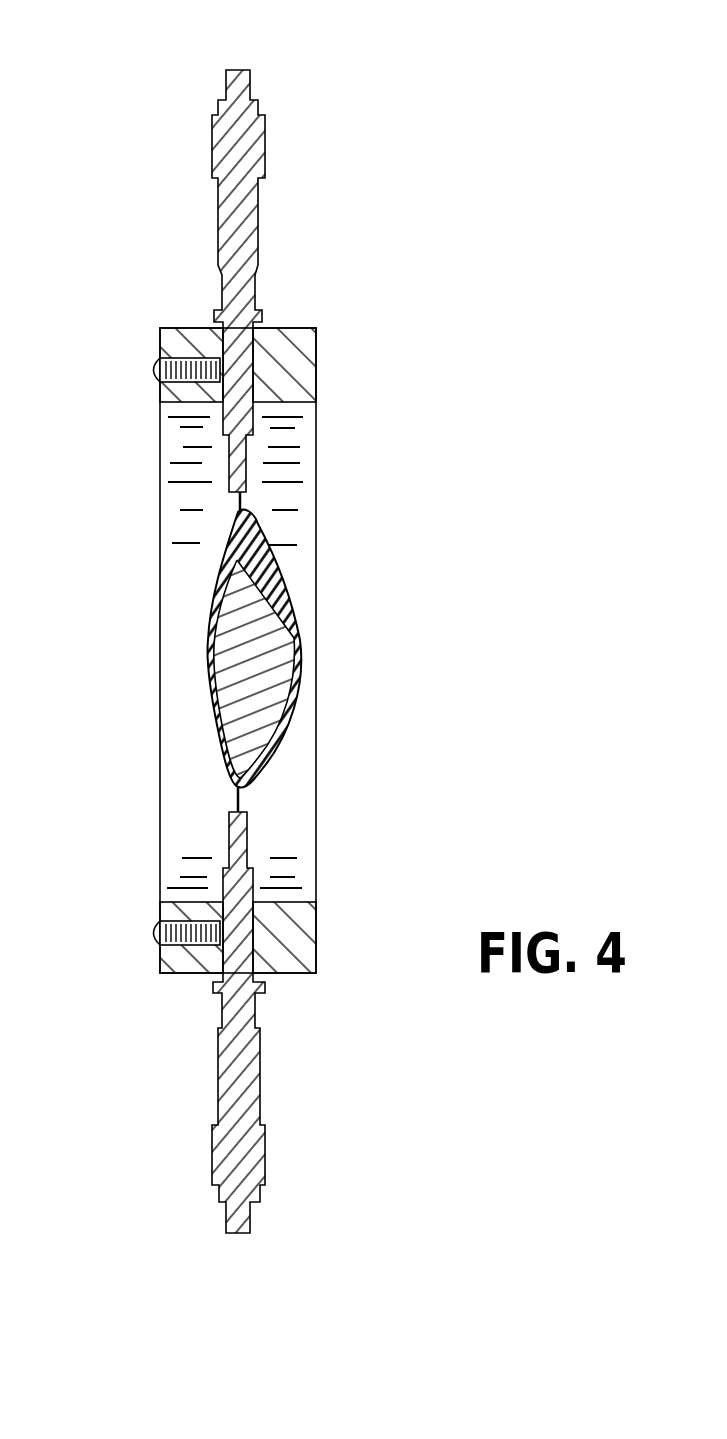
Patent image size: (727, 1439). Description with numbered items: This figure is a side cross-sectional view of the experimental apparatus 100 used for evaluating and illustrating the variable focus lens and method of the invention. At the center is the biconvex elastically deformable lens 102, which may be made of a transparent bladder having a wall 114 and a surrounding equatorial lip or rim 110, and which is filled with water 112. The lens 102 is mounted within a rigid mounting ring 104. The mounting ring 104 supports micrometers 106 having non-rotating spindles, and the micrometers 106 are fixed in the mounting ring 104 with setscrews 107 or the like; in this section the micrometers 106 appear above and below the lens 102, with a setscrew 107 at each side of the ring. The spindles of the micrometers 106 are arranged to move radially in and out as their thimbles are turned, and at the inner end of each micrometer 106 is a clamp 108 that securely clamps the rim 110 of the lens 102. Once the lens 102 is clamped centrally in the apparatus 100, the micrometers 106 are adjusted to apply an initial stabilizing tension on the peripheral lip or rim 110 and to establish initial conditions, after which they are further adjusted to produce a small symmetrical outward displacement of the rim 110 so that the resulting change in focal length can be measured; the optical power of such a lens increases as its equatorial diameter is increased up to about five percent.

The experimental apparatus 100 is at (376, 348).
The biconvex elastically deformable lens 102 is at (212, 600).
The mounting ring 104 is at (185, 328).
The micrometers 106 is at (240, 70).
The setscrews 107 is at (152, 370).
The clamp 108 is at (240, 495).
The equatorial lip or rim 110 is at (262, 523).
The water 112 is at (268, 636).
The wall 114 is at (297, 688).